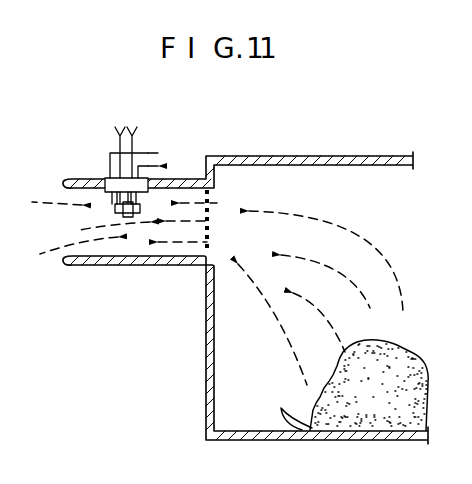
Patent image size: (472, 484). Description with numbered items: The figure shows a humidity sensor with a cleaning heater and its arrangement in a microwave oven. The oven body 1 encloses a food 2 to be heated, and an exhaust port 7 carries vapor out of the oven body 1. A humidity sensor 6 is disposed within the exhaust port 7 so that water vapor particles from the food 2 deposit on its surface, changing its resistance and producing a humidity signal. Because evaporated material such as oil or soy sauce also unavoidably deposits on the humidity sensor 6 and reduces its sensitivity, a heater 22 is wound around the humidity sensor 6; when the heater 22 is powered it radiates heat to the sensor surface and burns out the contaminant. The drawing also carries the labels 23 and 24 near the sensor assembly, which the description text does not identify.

The oven body 1 is at (328, 156).
The food 2 is at (407, 358).
The humidity sensor 6 is at (116, 209).
The exhaust port 7 is at (68, 267).
The heater 22 is at (124, 218).
The lead wires 23 is at (148, 125).
The air flow passage 24 is at (168, 145).